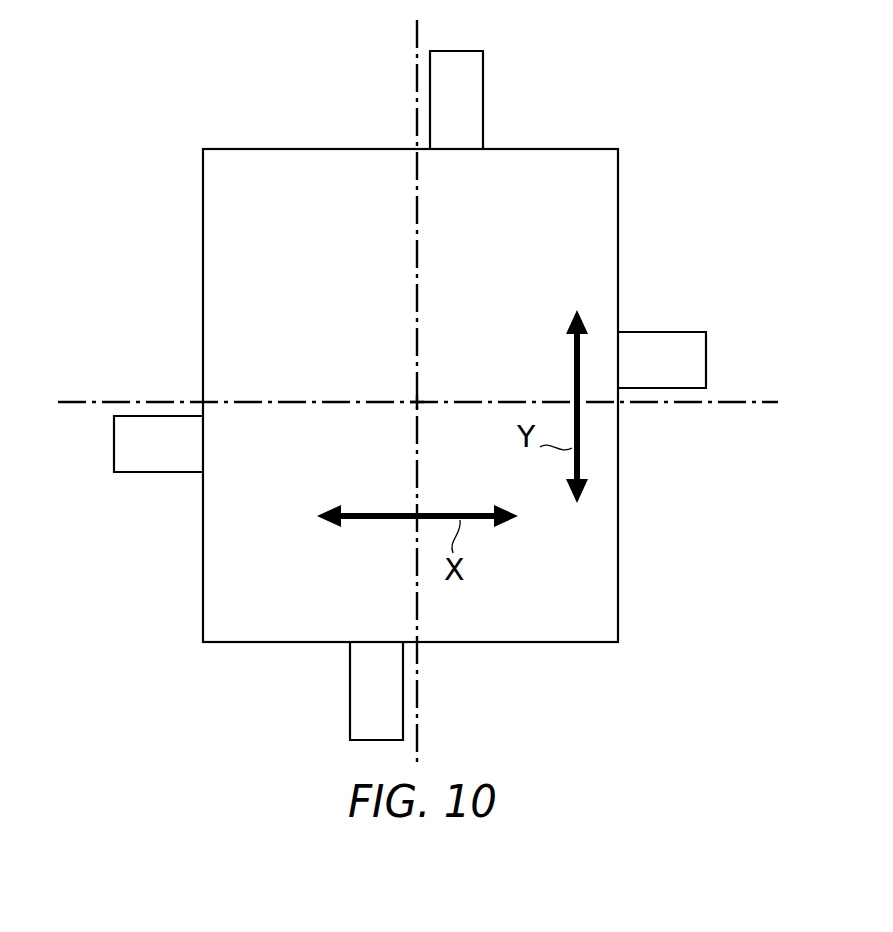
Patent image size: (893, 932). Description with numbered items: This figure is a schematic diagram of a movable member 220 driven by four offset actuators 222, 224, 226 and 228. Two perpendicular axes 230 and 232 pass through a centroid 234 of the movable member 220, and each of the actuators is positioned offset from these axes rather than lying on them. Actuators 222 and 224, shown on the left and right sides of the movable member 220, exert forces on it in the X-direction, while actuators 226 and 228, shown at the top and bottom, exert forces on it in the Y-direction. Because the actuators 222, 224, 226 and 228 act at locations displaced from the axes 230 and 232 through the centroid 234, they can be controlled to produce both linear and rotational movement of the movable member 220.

The movable member 220 is at (584, 158).
The actuator 222 is at (139, 460).
The actuator 224 is at (665, 342).
The actuator 226 is at (473, 103).
The actuator 228 is at (360, 701).
The perpendicular axis 230 is at (284, 401).
The perpendicular axis 232 is at (418, 232).
The centroid 234 is at (417, 401).